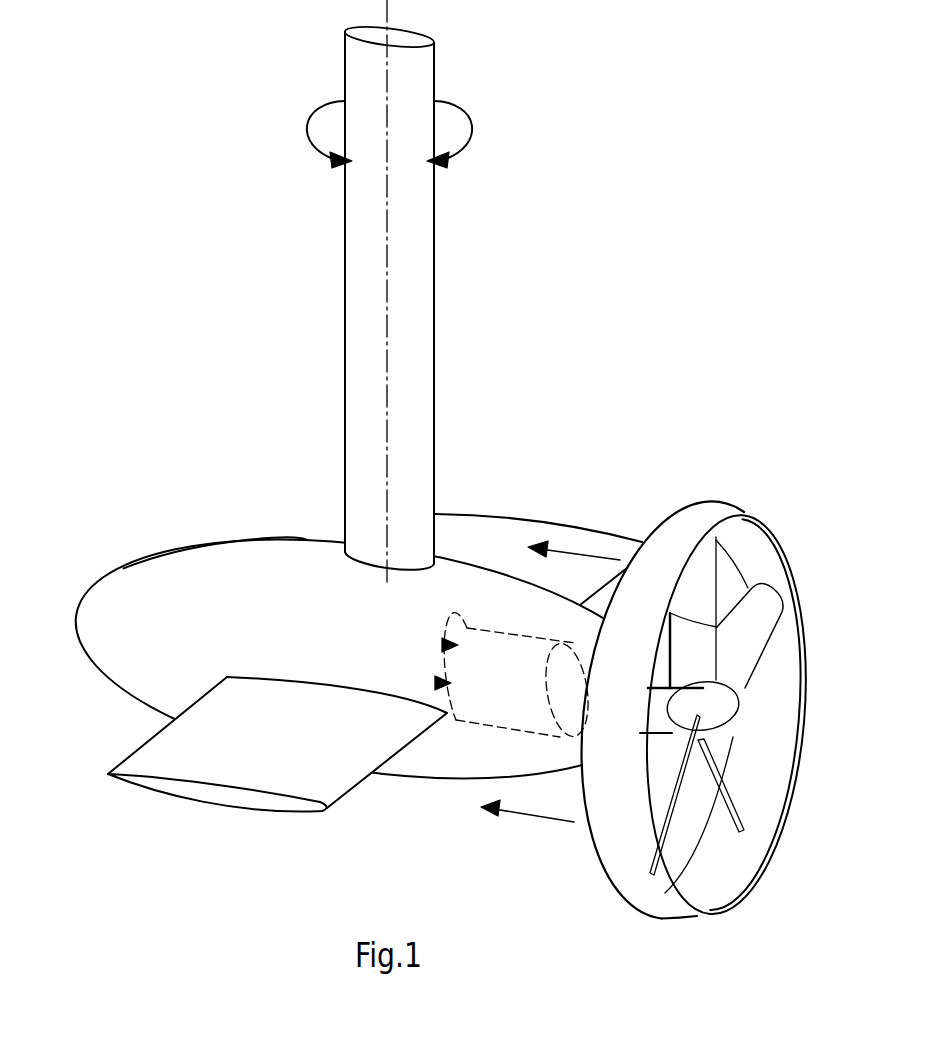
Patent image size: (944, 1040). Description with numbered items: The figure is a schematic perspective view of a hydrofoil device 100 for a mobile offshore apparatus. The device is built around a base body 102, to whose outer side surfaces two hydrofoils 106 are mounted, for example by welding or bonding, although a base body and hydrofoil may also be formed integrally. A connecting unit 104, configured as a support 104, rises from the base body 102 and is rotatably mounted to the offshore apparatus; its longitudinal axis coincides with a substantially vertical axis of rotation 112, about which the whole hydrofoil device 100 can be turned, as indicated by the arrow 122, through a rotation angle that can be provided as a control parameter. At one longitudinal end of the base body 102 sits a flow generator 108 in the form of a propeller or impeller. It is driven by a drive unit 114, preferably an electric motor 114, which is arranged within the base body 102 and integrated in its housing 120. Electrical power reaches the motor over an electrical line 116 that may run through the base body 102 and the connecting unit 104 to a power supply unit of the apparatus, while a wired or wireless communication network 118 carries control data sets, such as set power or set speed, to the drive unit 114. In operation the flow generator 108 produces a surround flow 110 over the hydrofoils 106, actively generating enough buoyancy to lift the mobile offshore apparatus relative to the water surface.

The hydrofoil device 100 is at (119, 413).
The base body 102 is at (146, 657).
The connecting unit 104 is at (420, 335).
The hydrofoil 106 is at (328, 775).
The flow generator 108 is at (770, 740).
The surround flow 110 is at (590, 530).
The axis of rotation 112 is at (389, 247).
The drive unit 114 is at (526, 695).
The electrical line 116 is at (410, 639).
The communication network 118 is at (403, 678).
The housing 120 is at (213, 540).
The arrow 122 is at (477, 123).